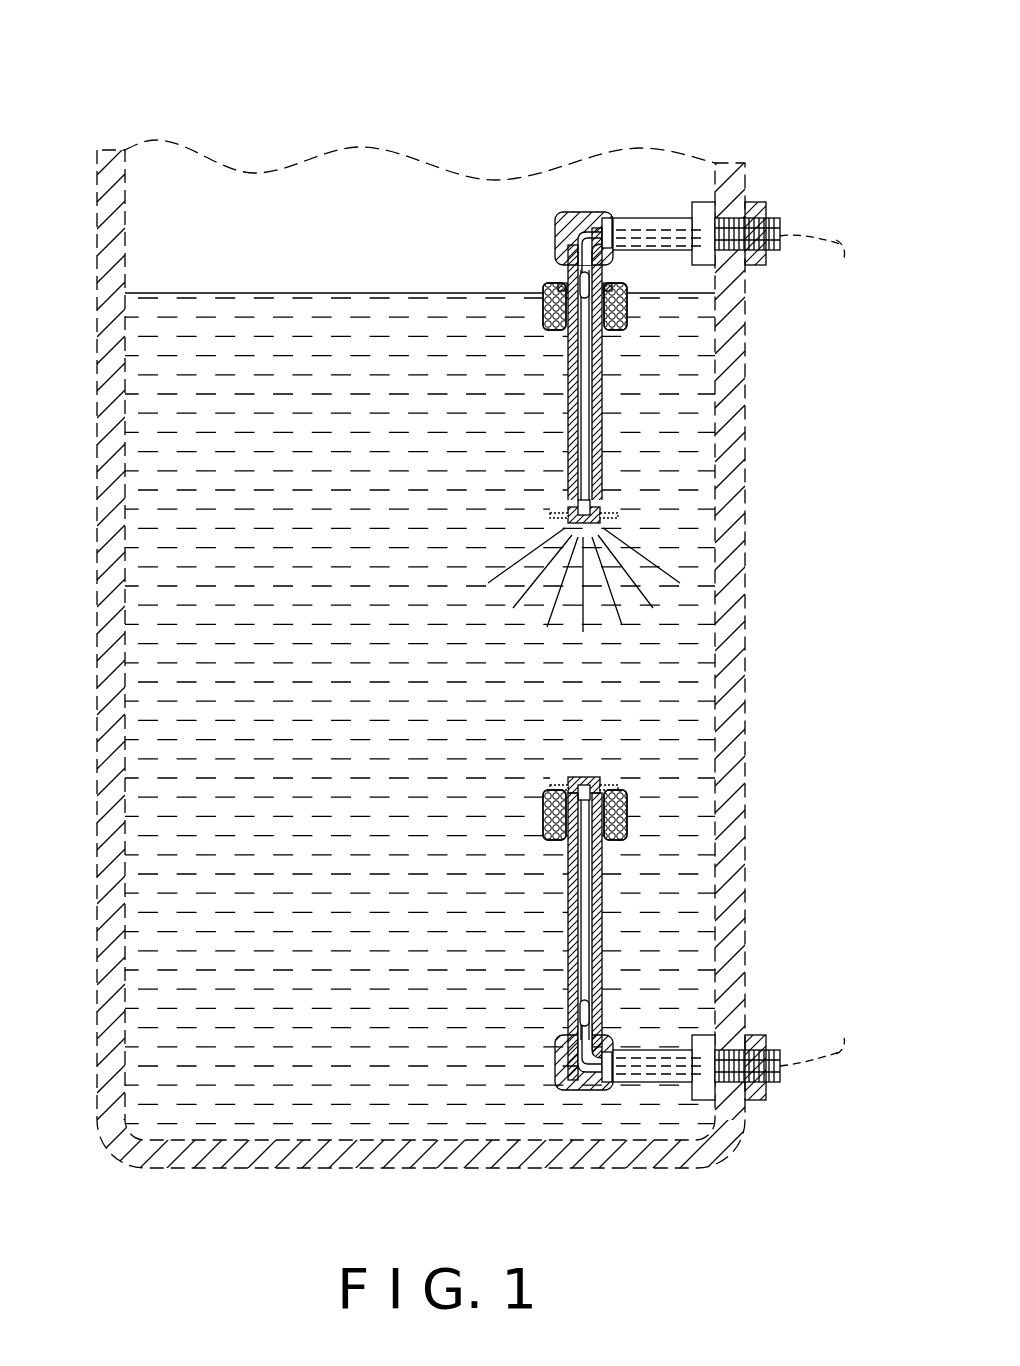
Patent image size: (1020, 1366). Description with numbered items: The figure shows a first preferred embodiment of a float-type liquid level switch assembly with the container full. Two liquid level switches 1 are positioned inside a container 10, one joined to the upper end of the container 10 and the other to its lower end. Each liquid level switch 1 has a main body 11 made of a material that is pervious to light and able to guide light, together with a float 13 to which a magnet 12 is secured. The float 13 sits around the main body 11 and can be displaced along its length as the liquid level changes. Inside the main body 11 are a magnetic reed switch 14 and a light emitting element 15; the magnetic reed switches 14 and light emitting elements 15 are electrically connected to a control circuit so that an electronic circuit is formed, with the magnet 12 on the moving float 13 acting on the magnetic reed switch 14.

The liquid level switch 1 is at (638, 550).
The container 10 is at (720, 770).
The main body 11 is at (573, 277).
The magnet 12 is at (627, 305).
The float 13 is at (608, 330).
The magnetic reed switch 14 is at (610, 272).
The light emitting element 15 is at (603, 507).